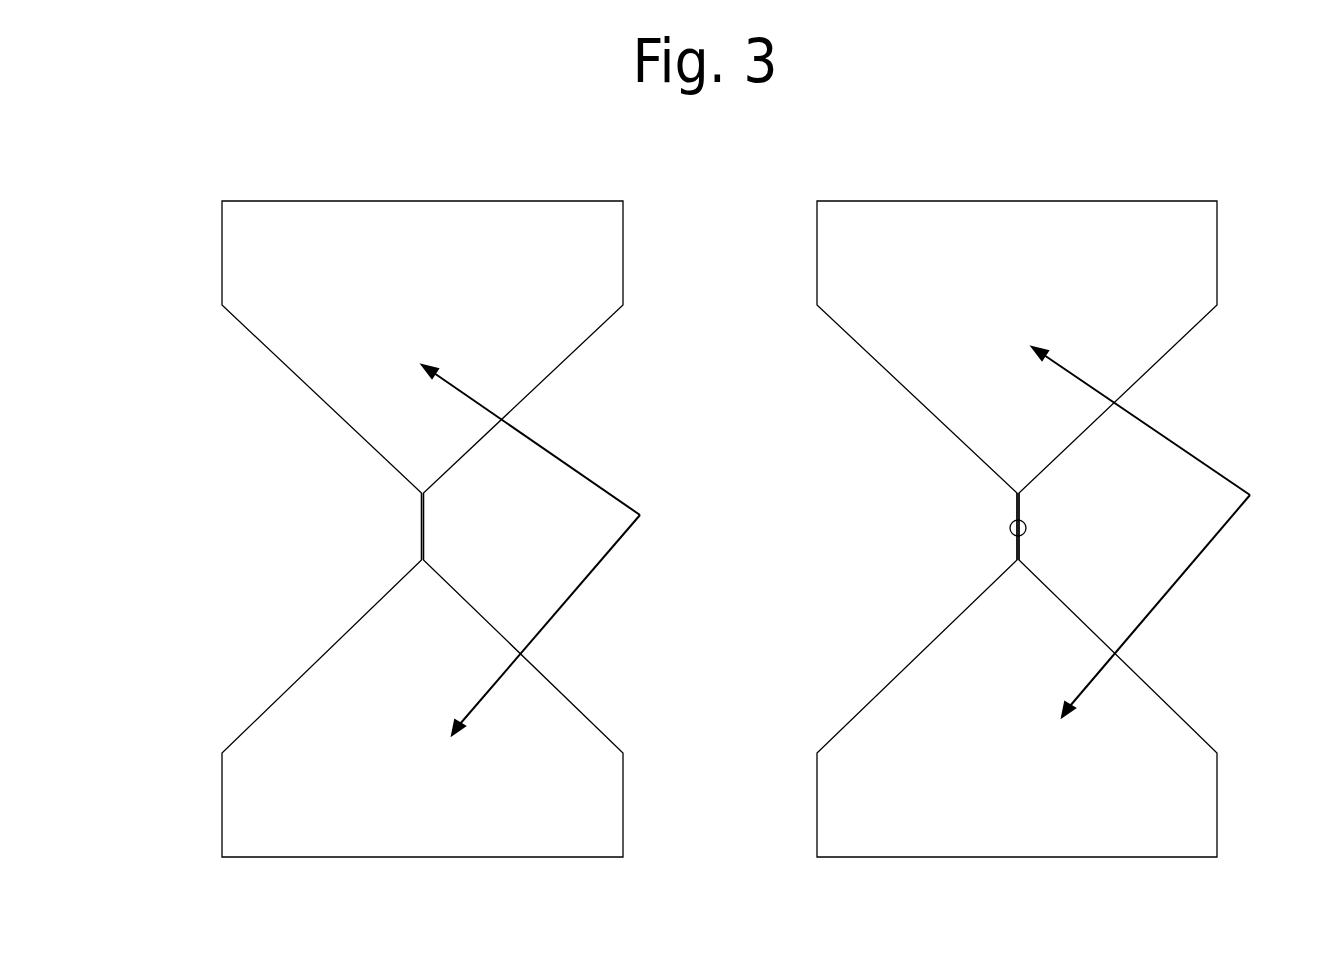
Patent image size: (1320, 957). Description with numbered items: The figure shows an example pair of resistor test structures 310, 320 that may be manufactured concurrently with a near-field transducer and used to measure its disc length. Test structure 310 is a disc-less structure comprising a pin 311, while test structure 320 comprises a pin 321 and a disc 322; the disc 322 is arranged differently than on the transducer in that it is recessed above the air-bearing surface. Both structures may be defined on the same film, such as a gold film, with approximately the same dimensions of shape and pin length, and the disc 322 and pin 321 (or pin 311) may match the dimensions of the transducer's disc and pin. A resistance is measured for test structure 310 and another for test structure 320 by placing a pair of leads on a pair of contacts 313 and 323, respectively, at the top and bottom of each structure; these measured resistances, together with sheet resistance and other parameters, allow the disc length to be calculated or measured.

The test structure 310 is at (329, 203).
The pin 311 is at (424, 531).
The contacts 313 is at (553, 550).
The test structure 320 is at (907, 203).
The pin 321 is at (1016, 508).
The disc 322 is at (1026, 523).
The contacts 323 is at (1162, 532).